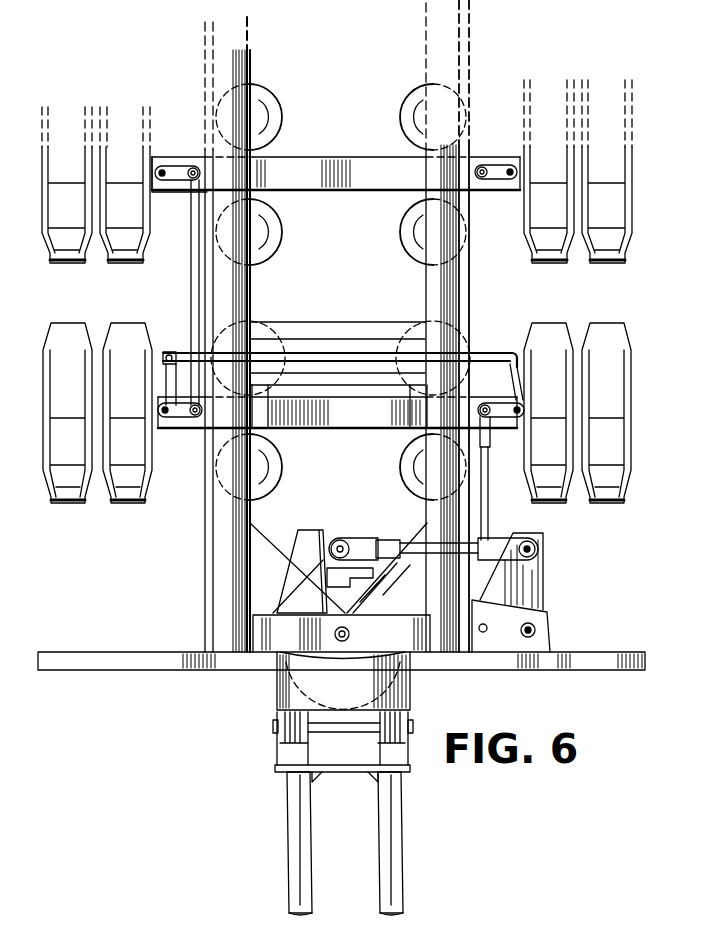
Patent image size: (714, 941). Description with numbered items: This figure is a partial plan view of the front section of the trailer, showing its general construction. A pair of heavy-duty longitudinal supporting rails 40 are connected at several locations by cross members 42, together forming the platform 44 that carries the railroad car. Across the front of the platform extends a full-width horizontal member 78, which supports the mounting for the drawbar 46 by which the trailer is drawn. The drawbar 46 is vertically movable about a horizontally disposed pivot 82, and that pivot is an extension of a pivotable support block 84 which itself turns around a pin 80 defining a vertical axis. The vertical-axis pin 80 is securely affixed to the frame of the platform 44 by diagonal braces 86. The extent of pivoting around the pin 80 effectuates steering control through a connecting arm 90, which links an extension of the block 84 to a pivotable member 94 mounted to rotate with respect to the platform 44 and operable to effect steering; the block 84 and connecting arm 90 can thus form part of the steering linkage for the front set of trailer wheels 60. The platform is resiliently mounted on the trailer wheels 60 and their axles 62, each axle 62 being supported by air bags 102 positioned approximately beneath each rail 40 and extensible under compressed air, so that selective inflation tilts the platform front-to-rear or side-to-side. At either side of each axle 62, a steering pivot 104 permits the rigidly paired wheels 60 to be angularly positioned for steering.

The supporting rails 40 is at (238, 293).
The cross members 42 is at (335, 328).
The platform 44 is at (210, 584).
The drawbar 46 is at (307, 810).
The trailer wheels 60 is at (72, 264).
The axles 62 is at (357, 165).
The horizontal member 78 is at (603, 660).
The pin 80 is at (350, 634).
The pivot 82 is at (323, 730).
The support block 84 is at (397, 687).
The diagonal braces 86 is at (270, 557).
The connecting arm 90 is at (362, 543).
The pivotable member 94 is at (541, 582).
The air bags 102 is at (272, 105).
The steering pivots 104 is at (163, 170).